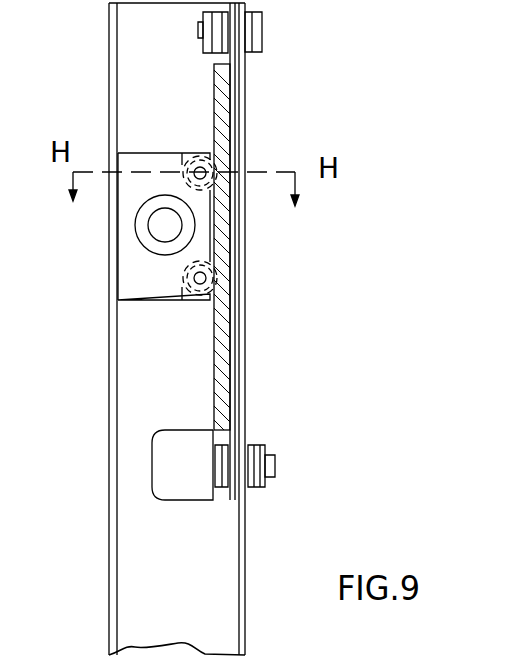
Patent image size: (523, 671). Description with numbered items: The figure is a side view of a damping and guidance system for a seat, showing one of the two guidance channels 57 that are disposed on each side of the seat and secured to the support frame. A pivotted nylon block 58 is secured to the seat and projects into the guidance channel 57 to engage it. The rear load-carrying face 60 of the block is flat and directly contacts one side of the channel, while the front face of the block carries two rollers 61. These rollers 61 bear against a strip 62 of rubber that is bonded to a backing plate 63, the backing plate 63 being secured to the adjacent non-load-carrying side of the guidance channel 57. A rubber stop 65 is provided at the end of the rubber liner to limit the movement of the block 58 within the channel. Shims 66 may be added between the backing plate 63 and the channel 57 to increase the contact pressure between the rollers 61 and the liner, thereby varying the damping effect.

The guidance channel 57 is at (112, 33).
The pivotted nylon block 58 is at (125, 278).
The rear load-carrying face 60 is at (117, 235).
The roller 61 is at (207, 175).
The rubber strip 62 is at (222, 373).
The backing plate 63 is at (230, 414).
The rubber stop 65 is at (162, 440).
The shim 66 is at (237, 502).